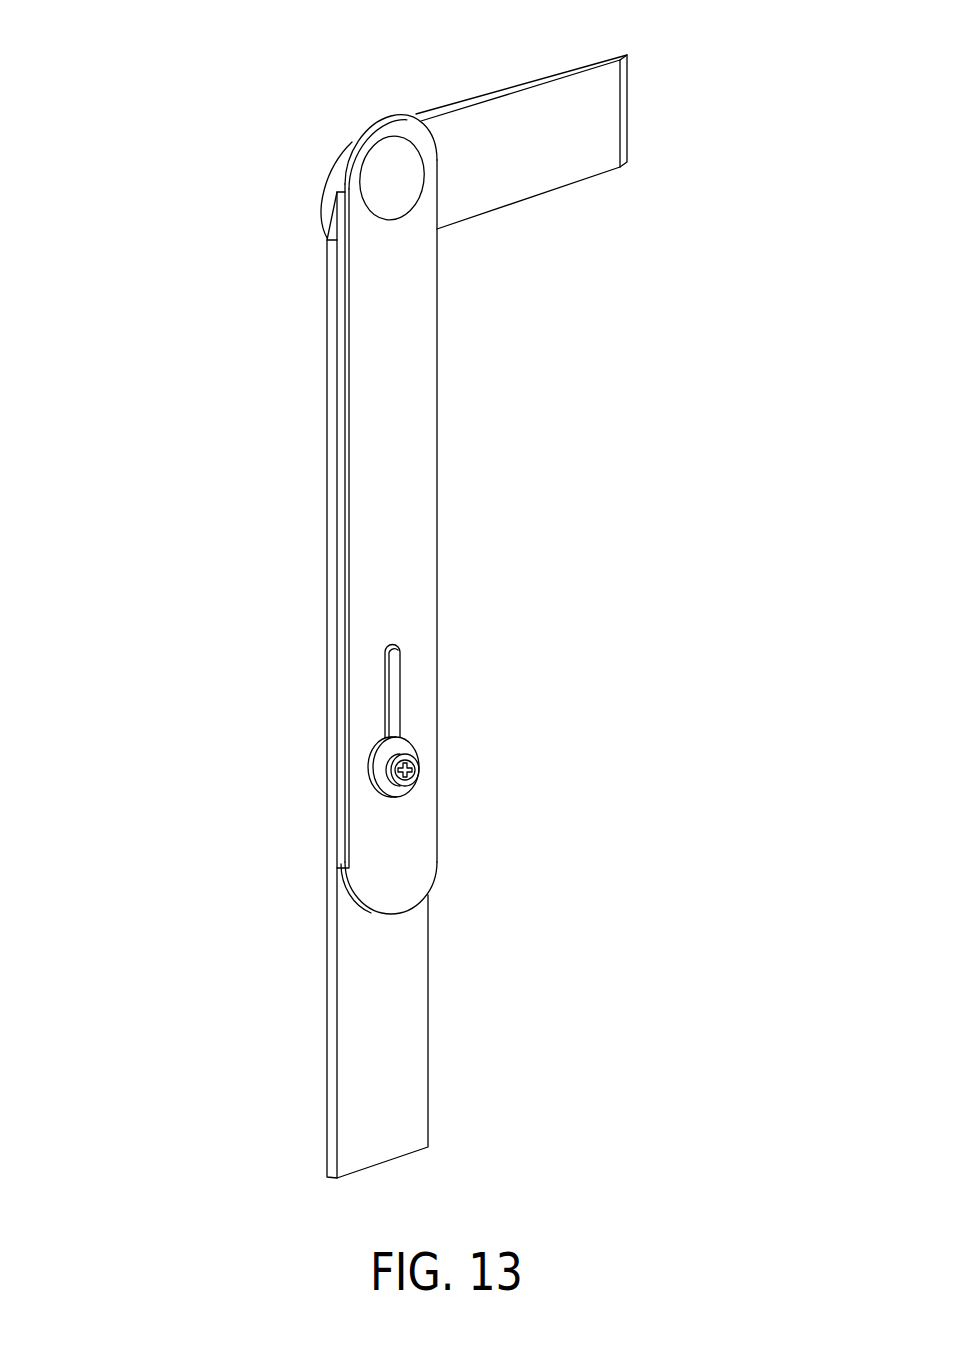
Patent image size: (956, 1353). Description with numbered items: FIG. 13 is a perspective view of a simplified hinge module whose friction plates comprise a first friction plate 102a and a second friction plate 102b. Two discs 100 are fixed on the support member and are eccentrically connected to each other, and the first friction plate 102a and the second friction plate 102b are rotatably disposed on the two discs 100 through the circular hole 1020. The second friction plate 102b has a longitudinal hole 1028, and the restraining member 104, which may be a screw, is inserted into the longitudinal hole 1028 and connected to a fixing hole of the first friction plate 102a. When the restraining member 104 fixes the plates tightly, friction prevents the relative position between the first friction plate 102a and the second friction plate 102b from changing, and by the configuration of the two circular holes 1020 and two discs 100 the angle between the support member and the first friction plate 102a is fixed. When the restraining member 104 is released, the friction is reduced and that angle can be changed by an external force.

The circular hole 1020 is at (392, 122).
The disc 100 is at (395, 202).
The second friction plate 102b is at (437, 514).
The longitudinal hole 1028 is at (397, 692).
The restraining member 104 is at (419, 768).
The first friction plate 102a is at (327, 1007).